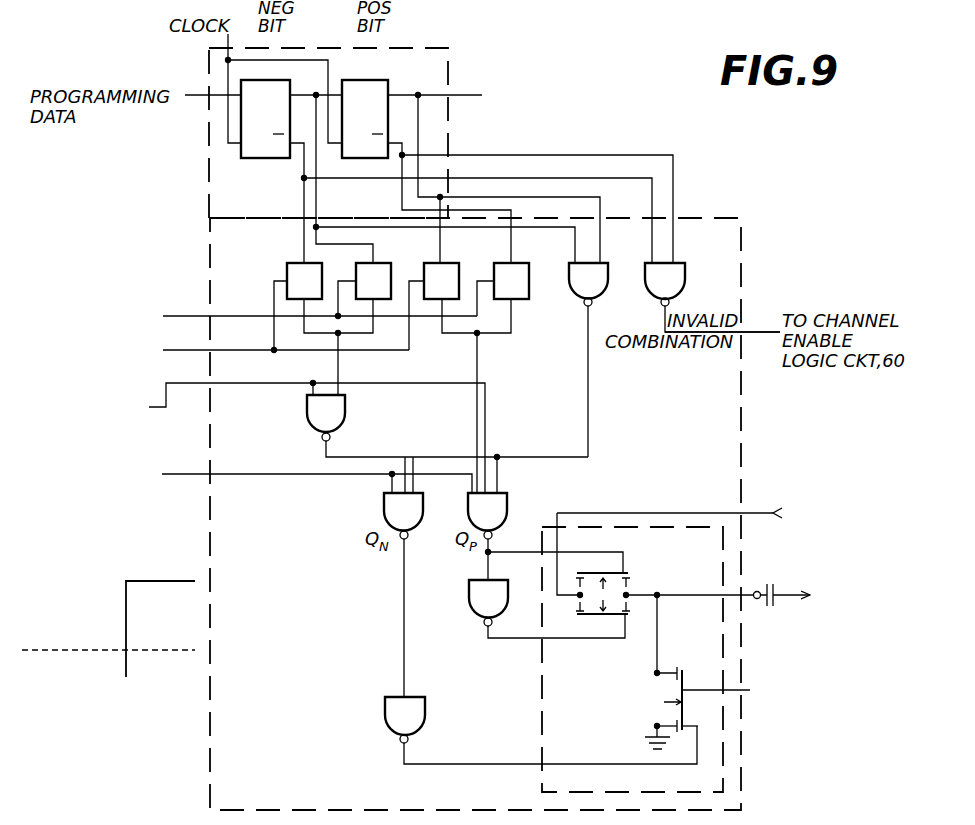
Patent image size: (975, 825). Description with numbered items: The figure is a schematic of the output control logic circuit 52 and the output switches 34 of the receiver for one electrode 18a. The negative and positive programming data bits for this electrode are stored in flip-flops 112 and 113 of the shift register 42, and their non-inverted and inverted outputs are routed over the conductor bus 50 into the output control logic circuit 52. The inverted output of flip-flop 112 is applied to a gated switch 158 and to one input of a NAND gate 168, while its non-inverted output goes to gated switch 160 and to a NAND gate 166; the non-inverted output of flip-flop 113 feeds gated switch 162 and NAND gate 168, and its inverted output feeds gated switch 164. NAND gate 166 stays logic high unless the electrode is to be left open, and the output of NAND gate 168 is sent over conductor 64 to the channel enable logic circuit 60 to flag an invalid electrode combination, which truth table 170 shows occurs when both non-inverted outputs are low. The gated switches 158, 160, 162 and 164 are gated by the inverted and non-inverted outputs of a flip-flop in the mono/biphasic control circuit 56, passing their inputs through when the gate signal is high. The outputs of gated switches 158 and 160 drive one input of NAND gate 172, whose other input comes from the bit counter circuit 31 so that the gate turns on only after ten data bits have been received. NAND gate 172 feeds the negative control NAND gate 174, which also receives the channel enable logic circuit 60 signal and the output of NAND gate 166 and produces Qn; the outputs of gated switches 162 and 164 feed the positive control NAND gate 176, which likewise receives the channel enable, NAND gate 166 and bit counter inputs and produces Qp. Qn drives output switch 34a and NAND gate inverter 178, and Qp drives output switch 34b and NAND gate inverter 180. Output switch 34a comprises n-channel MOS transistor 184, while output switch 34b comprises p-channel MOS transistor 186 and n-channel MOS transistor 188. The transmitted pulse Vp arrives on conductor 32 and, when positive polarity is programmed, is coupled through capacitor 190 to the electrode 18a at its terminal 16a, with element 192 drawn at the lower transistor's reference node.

The shift register 42 is at (404, 133).
The output control logic circuit 52 is at (475, 514).
The flip-flop 112 is at (282, 80).
The flip-flop 113 is at (383, 80).
The conductor bus 50 is at (316, 195).
The gated switch 158 is at (290, 268).
The gated switch 160 is at (383, 283).
The gated switch 162 is at (452, 283).
The gated switch 164 is at (522, 283).
The NAND gate 166 is at (596, 280).
The NAND gate 168 is at (676, 280).
The conductor 64 is at (758, 332).
The mono/biphasic control circuit 56 is at (184, 329).
The bit counter circuit 31 is at (256, 437).
The channel enable logic circuit 60 is at (245, 494).
The NAND gate 172 is at (335, 410).
The negative control NAND gate 174 is at (392, 506).
The positive control NAND gate 176 is at (500, 506).
The NAND gate inverter 178 is at (418, 712).
The NAND gate inverter 180 is at (478, 599).
The output switches 34 is at (668, 524).
The conductor 32 is at (757, 513).
The output switch 34b is at (640, 606).
The output switch 34a is at (664, 666).
The p-channel MOS transistor 186 is at (590, 573).
The n-channel MOS transistor 188 is at (595, 616).
The n-channel MOS transistor 184 is at (724, 699).
The ground capacitor 192 is at (662, 745).
The output terminal 16a is at (754, 590).
The electrode 18a is at (812, 593).
The capacitor 190 is at (770, 608).
The truth table 170 is at (120, 705).